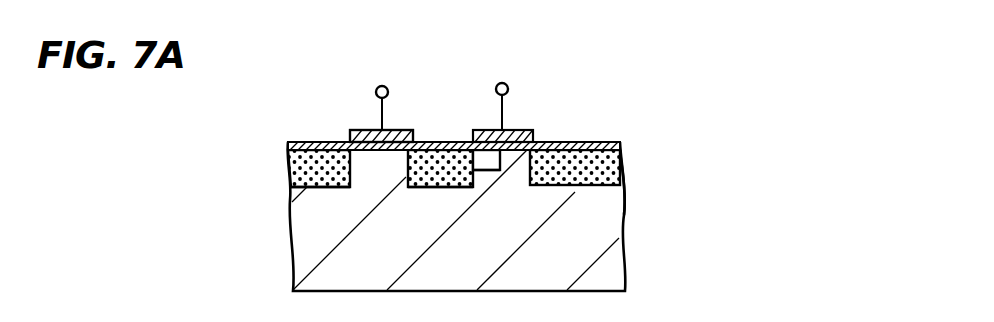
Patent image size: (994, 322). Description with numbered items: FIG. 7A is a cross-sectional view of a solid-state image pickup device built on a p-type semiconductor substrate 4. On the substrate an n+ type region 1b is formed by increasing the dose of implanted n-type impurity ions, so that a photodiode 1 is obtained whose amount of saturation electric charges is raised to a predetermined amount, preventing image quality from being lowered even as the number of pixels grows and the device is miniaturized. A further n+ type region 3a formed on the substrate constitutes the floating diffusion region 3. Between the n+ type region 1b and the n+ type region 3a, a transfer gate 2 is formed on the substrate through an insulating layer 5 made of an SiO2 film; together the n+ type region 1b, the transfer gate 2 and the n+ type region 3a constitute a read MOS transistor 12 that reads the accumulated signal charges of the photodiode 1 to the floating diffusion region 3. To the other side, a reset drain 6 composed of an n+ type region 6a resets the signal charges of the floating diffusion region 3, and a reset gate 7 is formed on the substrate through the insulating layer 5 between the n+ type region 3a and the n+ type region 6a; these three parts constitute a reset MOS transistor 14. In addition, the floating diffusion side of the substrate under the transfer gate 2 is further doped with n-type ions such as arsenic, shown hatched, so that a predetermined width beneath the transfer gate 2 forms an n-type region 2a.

The photodiode 1 is at (580, 150).
The n+ type region 1b is at (622, 170).
The transfer gate 2 is at (532, 130).
The n-type region 2a is at (490, 170).
The floating diffusion region 3 is at (441, 150).
The n+ type region 3a is at (418, 187).
The p-type semiconductor substrate 4 is at (612, 270).
The insulating layer 5 is at (620, 142).
The reset drain 6 is at (310, 148).
The n+ type region 6a is at (315, 187).
The reset gate 7 is at (408, 130).
The read MOS transistor 12 is at (502, 61).
The reset MOS transistor 14 is at (376, 60).